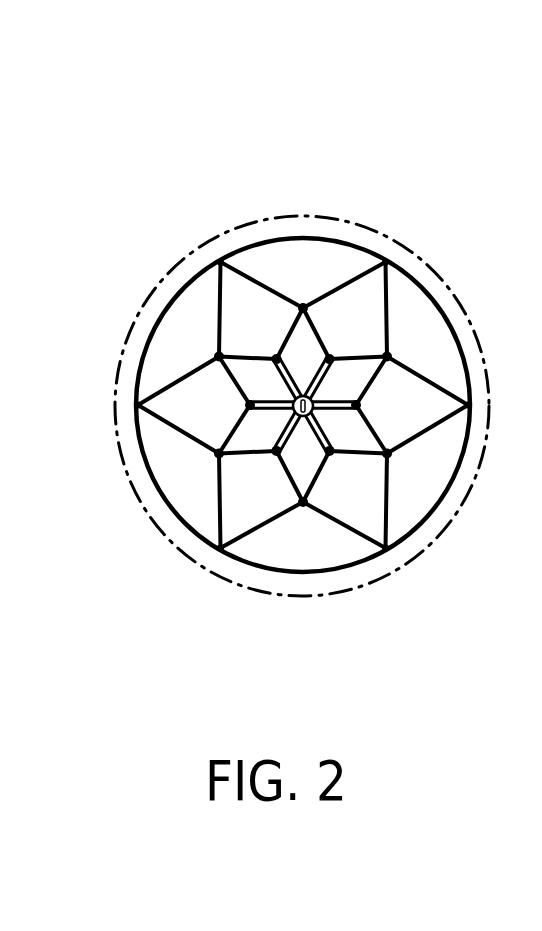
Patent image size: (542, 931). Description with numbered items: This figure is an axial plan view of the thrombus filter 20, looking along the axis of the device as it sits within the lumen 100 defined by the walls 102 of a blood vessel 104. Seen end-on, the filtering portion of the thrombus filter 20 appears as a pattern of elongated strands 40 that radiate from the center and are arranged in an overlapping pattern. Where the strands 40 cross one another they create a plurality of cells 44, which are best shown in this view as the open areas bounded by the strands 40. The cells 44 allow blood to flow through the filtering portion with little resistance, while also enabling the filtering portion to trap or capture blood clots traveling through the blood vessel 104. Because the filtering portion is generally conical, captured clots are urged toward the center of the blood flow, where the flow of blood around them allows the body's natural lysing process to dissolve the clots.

The thrombus filter 20 is at (319, 232).
The walls 102 is at (435, 275).
The cells 44 is at (309, 462).
The elongated strands 40 is at (268, 528).
The lumen 100 is at (300, 547).
The blood vessel 104 is at (266, 648).